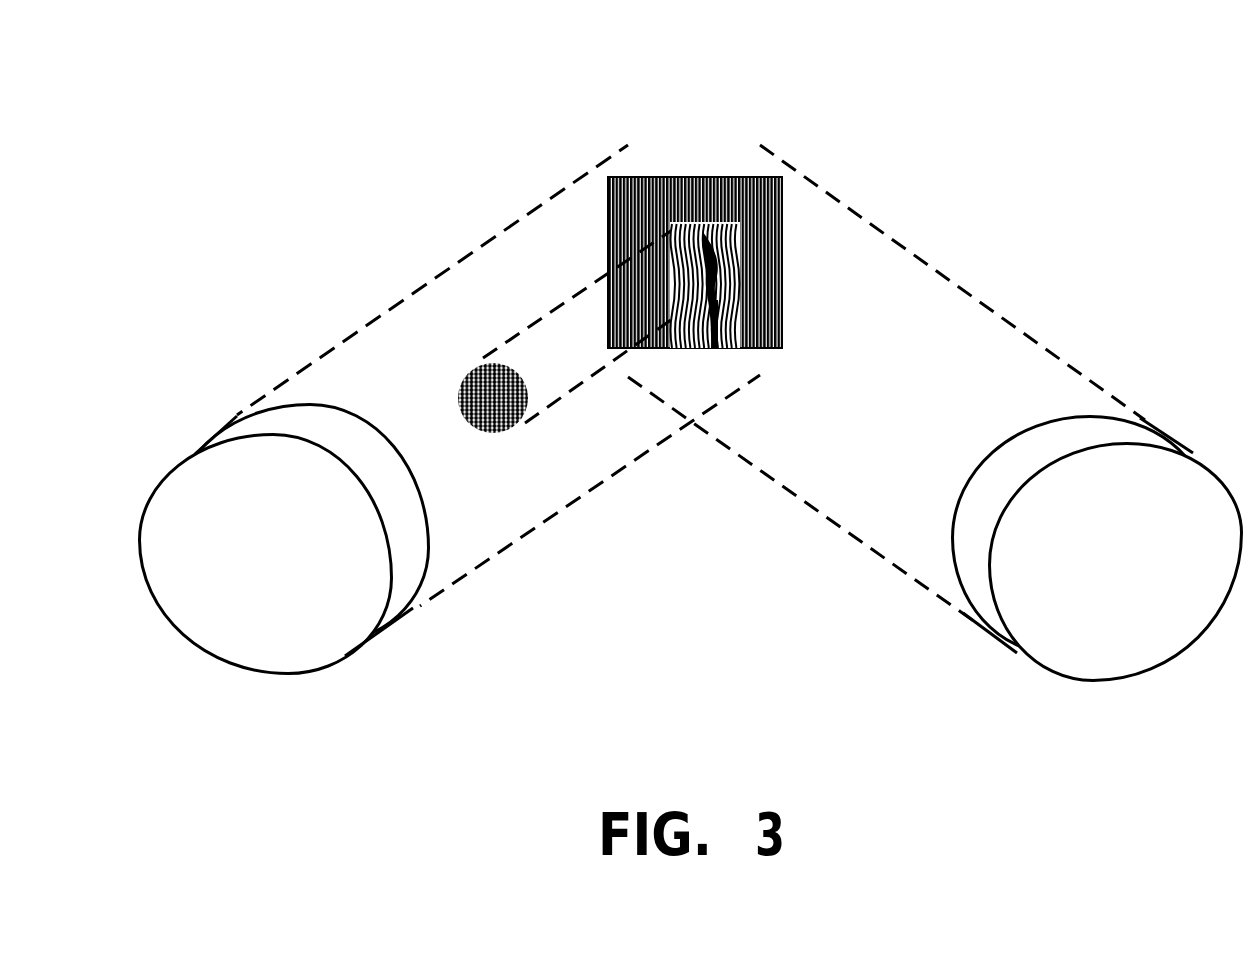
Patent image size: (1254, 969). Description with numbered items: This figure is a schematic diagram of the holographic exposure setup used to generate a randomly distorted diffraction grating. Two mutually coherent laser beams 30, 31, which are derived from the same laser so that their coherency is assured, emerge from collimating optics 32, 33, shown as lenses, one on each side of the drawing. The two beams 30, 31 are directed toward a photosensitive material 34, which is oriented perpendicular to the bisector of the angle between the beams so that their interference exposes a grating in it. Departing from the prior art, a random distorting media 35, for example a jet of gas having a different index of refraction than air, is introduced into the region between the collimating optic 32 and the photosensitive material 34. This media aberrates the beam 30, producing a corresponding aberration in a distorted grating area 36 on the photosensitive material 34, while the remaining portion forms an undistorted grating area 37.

The laser beam 30 is at (532, 535).
The laser beam 31 is at (855, 537).
The collimating optic 32 is at (430, 570).
The collimating optic 33 is at (953, 575).
The photosensitive material 34 is at (713, 177).
The random distorting media 35 is at (467, 368).
The distorted grating area 36 is at (680, 232).
The undistorted grating area 37 is at (743, 317).